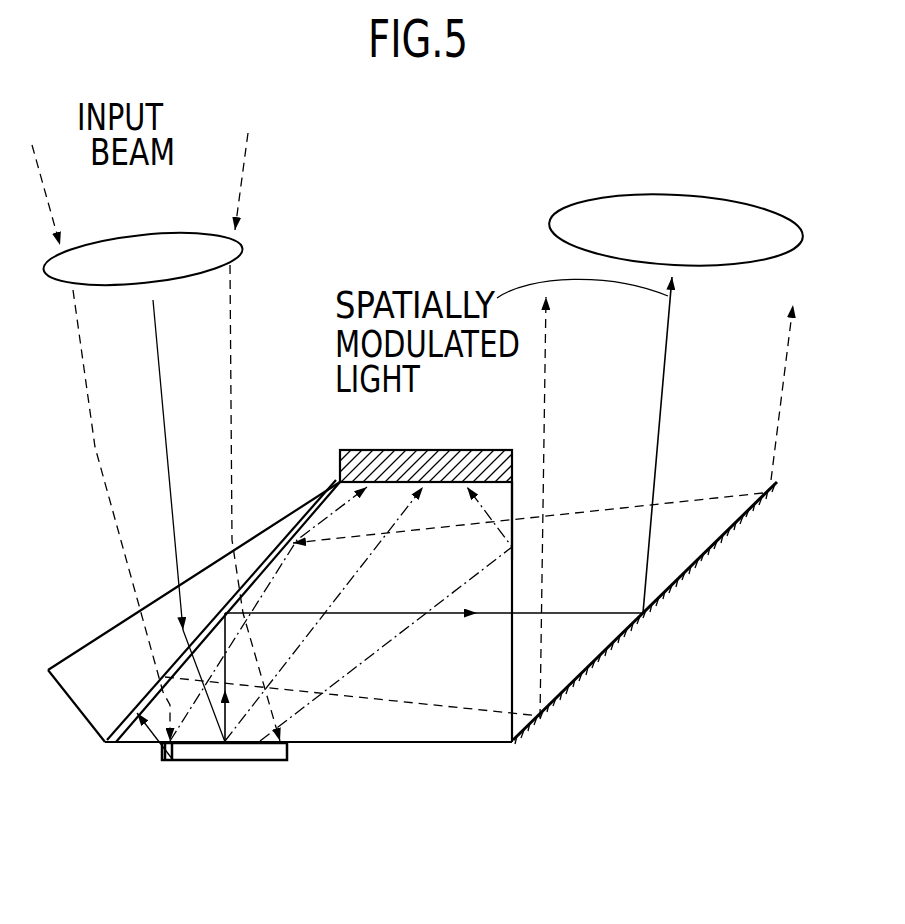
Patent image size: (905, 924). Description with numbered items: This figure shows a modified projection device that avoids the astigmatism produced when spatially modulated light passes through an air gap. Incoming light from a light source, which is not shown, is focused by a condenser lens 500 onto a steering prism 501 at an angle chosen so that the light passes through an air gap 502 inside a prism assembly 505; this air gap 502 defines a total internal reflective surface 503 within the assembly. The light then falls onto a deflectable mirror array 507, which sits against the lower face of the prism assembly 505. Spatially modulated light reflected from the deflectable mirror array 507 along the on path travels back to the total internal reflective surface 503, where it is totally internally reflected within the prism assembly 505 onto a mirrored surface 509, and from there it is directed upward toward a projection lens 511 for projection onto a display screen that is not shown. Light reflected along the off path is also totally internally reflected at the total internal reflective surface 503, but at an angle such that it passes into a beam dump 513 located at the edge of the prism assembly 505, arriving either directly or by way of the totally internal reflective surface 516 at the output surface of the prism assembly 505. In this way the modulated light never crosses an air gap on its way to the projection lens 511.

The condenser lens 500 is at (236, 262).
The steering prism 501 is at (107, 690).
The air gap 502 is at (118, 743).
The total internal reflective surface 503 is at (168, 749).
The prism assembly 505 is at (468, 750).
The deflectable mirror array 507 is at (293, 763).
The mirrored surface 509 is at (600, 648).
The projection lens 511 is at (552, 224).
The beam dump 513 is at (340, 458).
The totally internal reflective surface at the output surface 516 is at (515, 497).